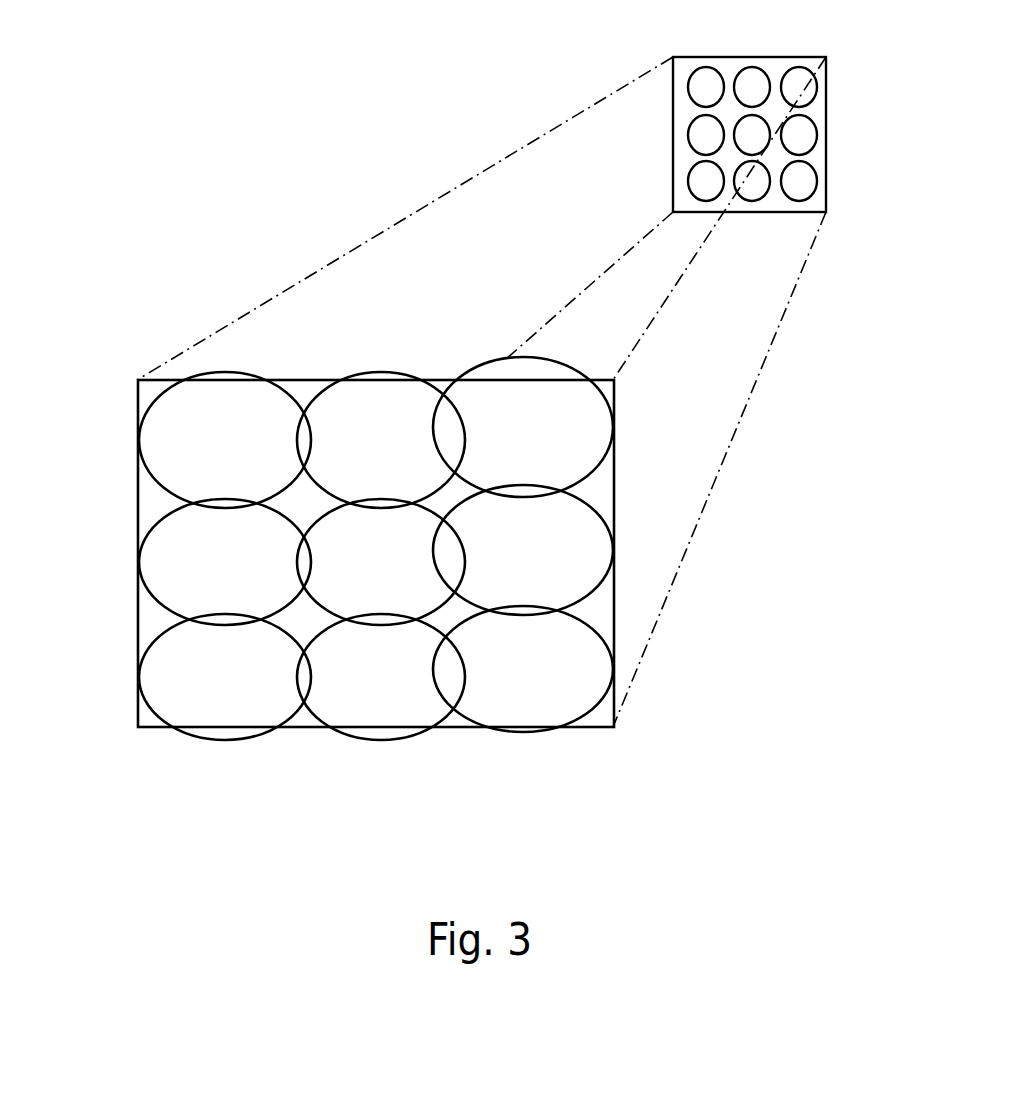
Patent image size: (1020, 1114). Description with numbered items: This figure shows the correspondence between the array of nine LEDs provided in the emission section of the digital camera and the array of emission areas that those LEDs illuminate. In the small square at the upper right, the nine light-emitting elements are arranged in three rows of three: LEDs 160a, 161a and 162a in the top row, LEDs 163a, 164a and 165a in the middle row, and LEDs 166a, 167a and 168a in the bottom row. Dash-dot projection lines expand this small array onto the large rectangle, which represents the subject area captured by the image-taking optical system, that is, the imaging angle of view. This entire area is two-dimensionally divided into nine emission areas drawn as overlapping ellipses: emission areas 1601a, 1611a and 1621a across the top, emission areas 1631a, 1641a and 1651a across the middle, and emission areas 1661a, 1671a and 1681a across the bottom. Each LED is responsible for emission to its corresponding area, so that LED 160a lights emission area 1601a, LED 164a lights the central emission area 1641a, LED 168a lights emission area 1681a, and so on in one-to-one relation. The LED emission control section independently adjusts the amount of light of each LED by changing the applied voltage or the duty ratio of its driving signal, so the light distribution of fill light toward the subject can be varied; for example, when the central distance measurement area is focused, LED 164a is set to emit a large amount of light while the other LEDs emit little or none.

The LED 160a is at (707, 80).
The LED 161a is at (753, 80).
The LED 162a is at (798, 80).
The LED 163a is at (702, 137).
The LED 164a is at (752, 128).
The LED 165a is at (797, 138).
The LED 166a is at (702, 180).
The LED 167a is at (753, 190).
The LED 168a is at (802, 182).
The emission area 1601a is at (163, 447).
The emission area 1611a is at (380, 384).
The emission area 1621a is at (595, 422).
The emission area 1631a is at (162, 560).
The emission area 1641a is at (375, 602).
The emission area 1651a is at (588, 517).
The emission area 1661a is at (233, 717).
The emission area 1671a is at (417, 723).
The emission area 1681a is at (595, 665).